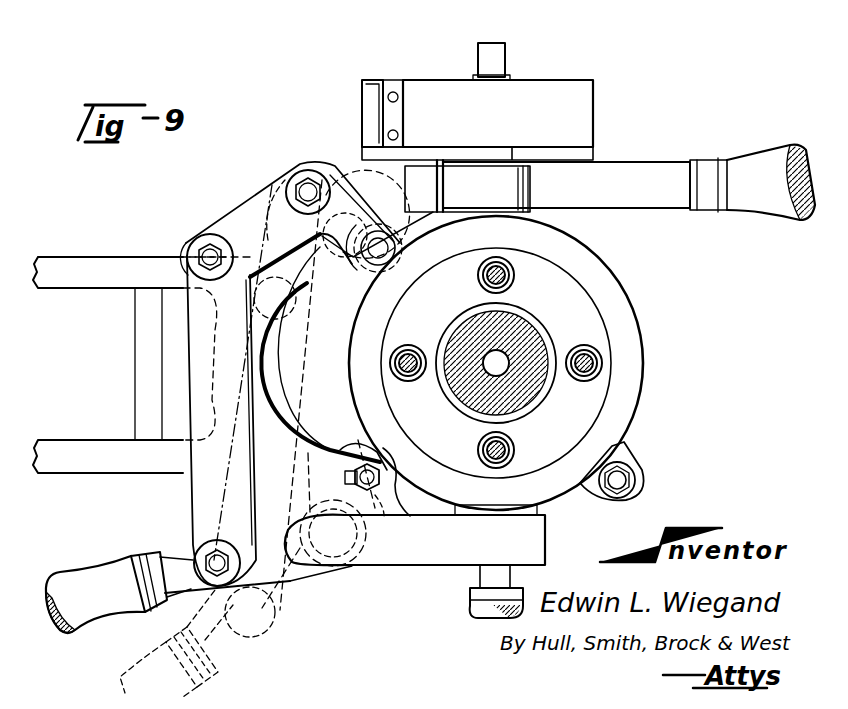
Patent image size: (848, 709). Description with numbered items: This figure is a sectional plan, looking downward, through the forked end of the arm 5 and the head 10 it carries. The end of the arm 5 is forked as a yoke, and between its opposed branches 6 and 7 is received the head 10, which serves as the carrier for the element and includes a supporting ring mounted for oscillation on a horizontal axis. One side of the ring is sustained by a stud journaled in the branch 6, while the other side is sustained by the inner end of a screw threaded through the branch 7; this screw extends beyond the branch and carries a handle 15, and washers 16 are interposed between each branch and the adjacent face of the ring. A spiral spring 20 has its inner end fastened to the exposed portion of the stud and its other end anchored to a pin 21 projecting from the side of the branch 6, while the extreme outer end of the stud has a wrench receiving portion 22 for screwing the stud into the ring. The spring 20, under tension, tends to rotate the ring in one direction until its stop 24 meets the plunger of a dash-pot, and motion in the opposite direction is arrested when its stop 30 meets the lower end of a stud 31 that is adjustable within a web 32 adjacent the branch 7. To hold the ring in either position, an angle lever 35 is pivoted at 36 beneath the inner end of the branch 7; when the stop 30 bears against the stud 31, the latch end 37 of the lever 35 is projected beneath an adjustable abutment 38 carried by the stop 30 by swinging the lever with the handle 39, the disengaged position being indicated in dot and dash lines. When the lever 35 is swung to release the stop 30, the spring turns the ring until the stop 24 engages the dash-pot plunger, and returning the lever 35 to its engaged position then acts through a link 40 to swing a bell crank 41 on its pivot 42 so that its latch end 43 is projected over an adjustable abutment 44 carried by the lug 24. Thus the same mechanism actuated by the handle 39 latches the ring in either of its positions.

The arm 5 is at (85, 260).
The branch 6 is at (634, 168).
The branch 7 is at (441, 552).
The head 10 is at (512, 363).
The handle 15 is at (470, 612).
The washers 16 is at (536, 211).
The spiral spring 20 is at (477, 120).
The pin 21 is at (372, 82).
The wrench receiving portion 22 is at (502, 57).
The stop 24 is at (297, 395).
The stop 30 is at (637, 470).
The stud 31 is at (385, 476).
The web 32 is at (395, 488).
The angle lever 35 is at (288, 585).
The pivot 36 is at (343, 548).
The latch end 37 is at (370, 456).
The adjustable abutment 38 is at (617, 490).
The handle 39 is at (95, 577).
The link 40 is at (195, 488).
The bell crank 41 is at (246, 204).
The pivot 42 is at (308, 185).
The latch end 43 is at (369, 221).
The adjustable abutment 44 is at (400, 249).